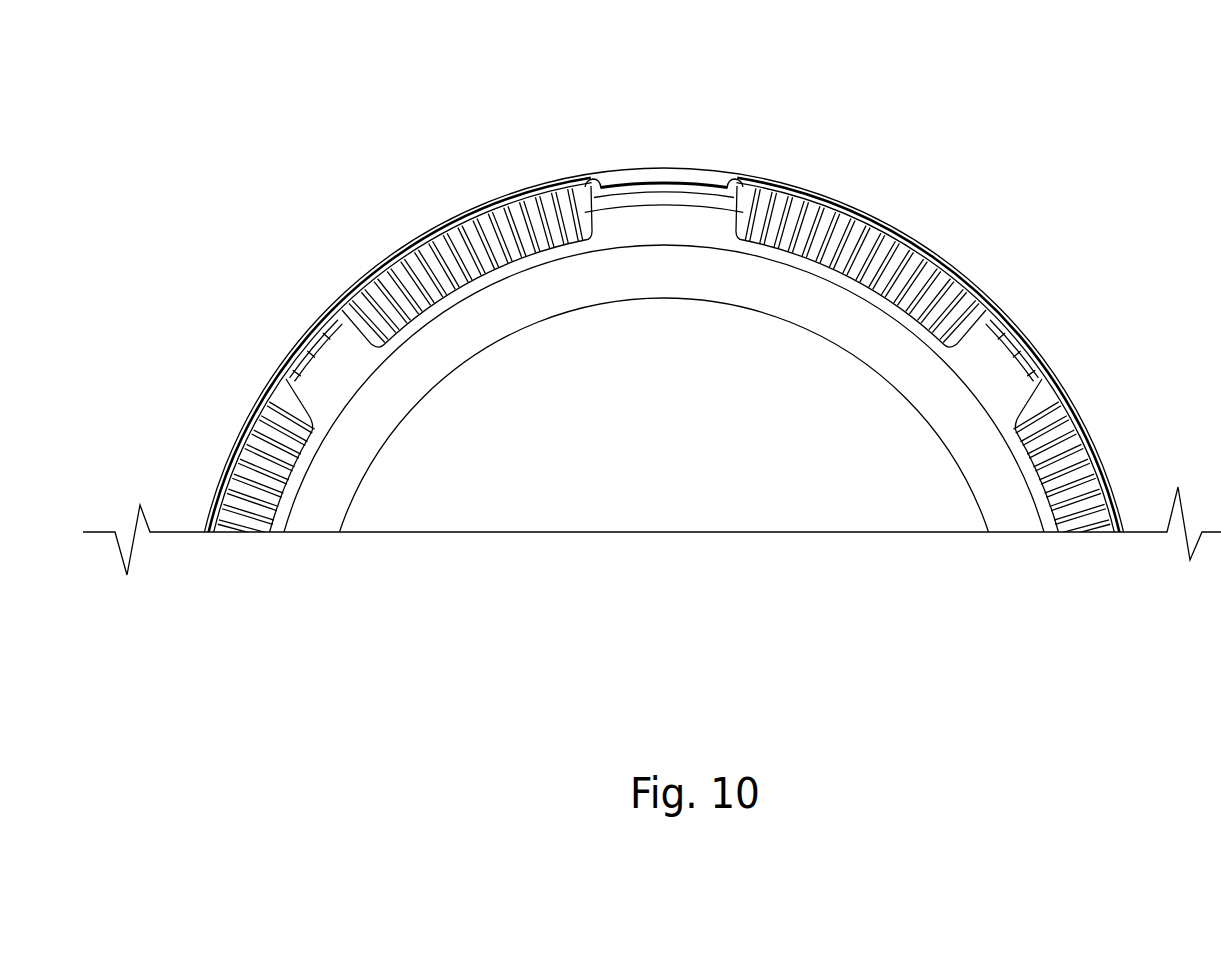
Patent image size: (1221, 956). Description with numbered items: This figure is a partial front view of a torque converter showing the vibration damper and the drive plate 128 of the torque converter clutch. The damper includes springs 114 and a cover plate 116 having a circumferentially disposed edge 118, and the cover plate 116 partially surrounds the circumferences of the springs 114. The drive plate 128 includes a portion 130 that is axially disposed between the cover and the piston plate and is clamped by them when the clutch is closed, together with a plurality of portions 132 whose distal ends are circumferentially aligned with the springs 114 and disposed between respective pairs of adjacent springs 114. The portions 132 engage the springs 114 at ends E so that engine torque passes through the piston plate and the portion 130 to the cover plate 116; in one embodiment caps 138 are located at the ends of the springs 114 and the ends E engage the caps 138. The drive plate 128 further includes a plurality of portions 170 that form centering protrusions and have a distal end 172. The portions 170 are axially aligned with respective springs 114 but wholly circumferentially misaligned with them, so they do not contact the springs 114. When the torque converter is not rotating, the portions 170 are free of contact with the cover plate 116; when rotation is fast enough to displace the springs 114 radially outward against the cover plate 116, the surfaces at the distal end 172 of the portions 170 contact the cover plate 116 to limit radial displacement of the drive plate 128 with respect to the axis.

The springs 114 is at (458, 248).
The cover plate 116 is at (885, 207).
The circumferentially disposed edge 118 is at (931, 272).
The drive plate 128 is at (398, 294).
The portion 130 is at (549, 287).
The portions 132 is at (671, 215).
The caps 138 is at (742, 192).
The portions 170 is at (288, 393).
The distal end 172 is at (327, 355).
The ends E is at (735, 210).